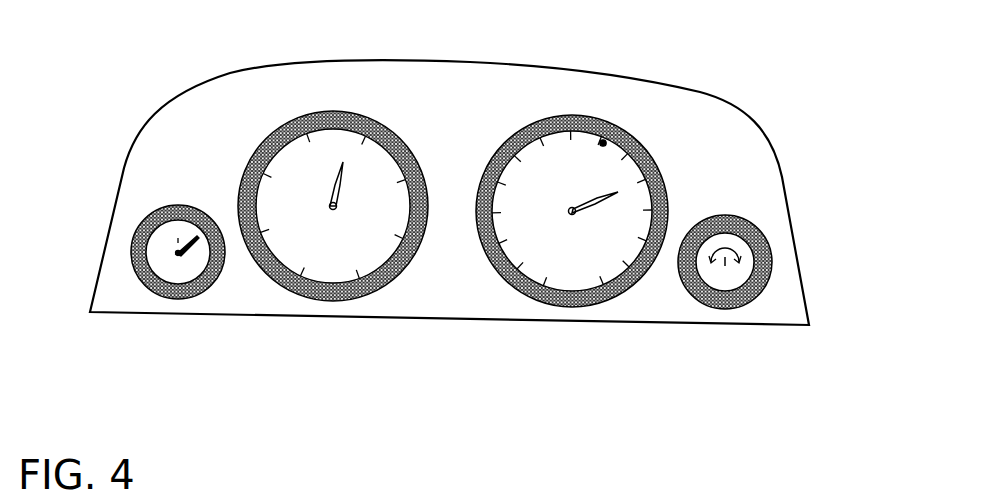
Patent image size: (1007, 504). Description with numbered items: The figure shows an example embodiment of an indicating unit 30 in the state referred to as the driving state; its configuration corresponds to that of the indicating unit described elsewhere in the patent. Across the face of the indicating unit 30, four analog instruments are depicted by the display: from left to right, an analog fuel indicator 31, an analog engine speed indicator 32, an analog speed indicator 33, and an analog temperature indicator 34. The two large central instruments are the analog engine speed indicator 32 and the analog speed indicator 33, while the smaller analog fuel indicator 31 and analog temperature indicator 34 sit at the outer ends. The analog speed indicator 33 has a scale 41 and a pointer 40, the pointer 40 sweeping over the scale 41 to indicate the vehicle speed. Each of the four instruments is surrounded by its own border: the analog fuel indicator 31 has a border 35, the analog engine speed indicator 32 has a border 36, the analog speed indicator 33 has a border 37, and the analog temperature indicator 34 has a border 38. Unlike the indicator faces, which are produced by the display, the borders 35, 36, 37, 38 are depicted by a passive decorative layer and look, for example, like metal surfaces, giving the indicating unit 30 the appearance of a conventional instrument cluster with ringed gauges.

The indicating unit 30 is at (778, 83).
The analog fuel indicator 31 is at (138, 300).
The analog engine speed indicator 32 is at (333, 254).
The analog speed indicator 33 is at (572, 201).
The analog temperature indicator 34 is at (768, 311).
The border 35 is at (187, 290).
The border 36 is at (350, 292).
The border 37 is at (585, 295).
The border 38 is at (743, 298).
The pointer 40 is at (590, 198).
The scale 41 is at (603, 143).